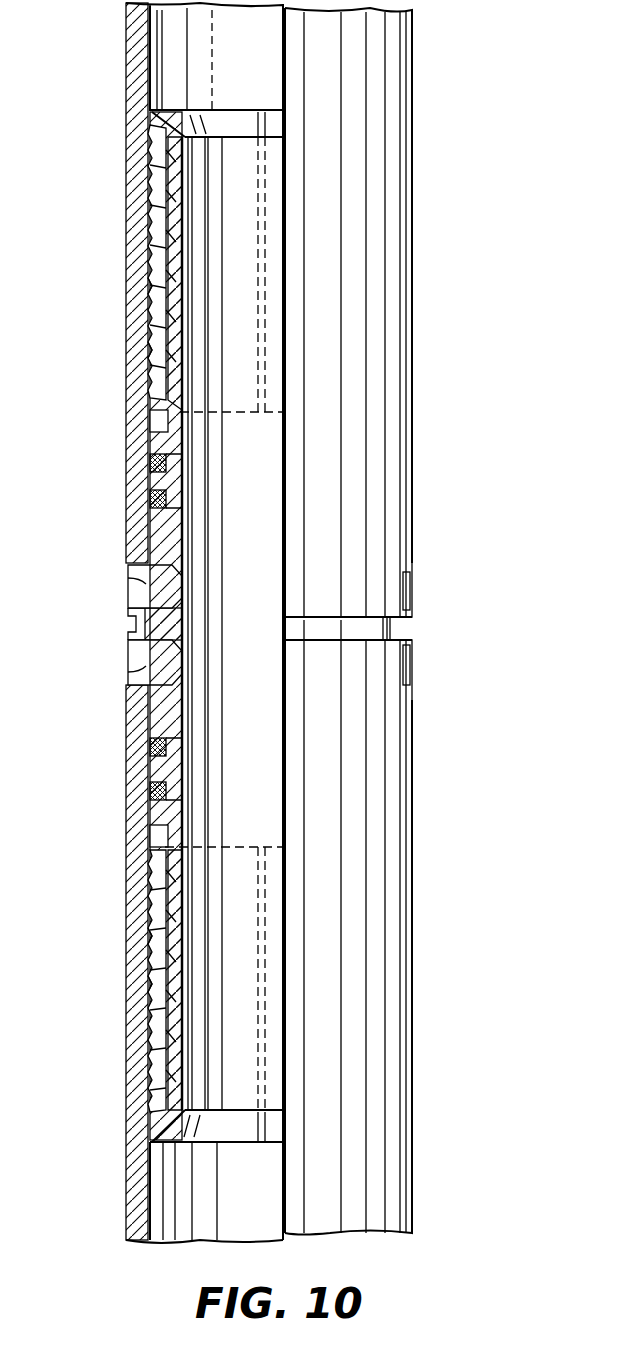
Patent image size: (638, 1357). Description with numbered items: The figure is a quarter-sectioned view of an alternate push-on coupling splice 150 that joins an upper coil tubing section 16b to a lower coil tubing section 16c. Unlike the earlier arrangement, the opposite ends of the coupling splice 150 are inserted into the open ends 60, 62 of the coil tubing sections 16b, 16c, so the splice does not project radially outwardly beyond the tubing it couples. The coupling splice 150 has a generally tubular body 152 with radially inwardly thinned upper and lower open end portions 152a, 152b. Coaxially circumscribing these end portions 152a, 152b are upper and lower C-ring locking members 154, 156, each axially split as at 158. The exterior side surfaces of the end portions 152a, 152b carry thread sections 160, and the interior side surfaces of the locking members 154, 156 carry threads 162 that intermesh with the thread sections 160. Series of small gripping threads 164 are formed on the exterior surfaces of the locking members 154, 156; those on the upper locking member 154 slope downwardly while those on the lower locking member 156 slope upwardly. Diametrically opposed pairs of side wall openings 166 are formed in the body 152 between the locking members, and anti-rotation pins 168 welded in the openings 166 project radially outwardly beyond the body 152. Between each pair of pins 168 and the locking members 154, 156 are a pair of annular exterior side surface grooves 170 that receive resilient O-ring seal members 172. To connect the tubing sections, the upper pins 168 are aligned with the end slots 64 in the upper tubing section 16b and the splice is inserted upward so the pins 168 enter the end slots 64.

The upper coil tubing section 16b is at (135, 66).
The lower coil tubing section 16c is at (135, 1196).
The open end of upper coil tubing section 60 is at (380, 616).
The open end of lower coil tubing section 62 is at (318, 632).
The end slots 64 is at (135, 628).
The coupling splice 150 is at (222, 108).
The tubular body 152 is at (168, 530).
The upper open end portion 152a is at (185, 198).
The lower open end portion 152b is at (185, 1080).
The upper C-ring locking member 154 is at (150, 286).
The lower C-ring locking member 156 is at (150, 986).
The axial split 158 is at (268, 266).
The thread sections 160 is at (148, 352).
The threads 162 is at (172, 236).
The gripping threads 164 is at (148, 186).
The side wall openings 166 is at (146, 566).
The anti-rotation pins 168 is at (146, 584).
The annular exterior side surface grooves 170 is at (166, 498).
The O-ring seal members 172 is at (148, 498).